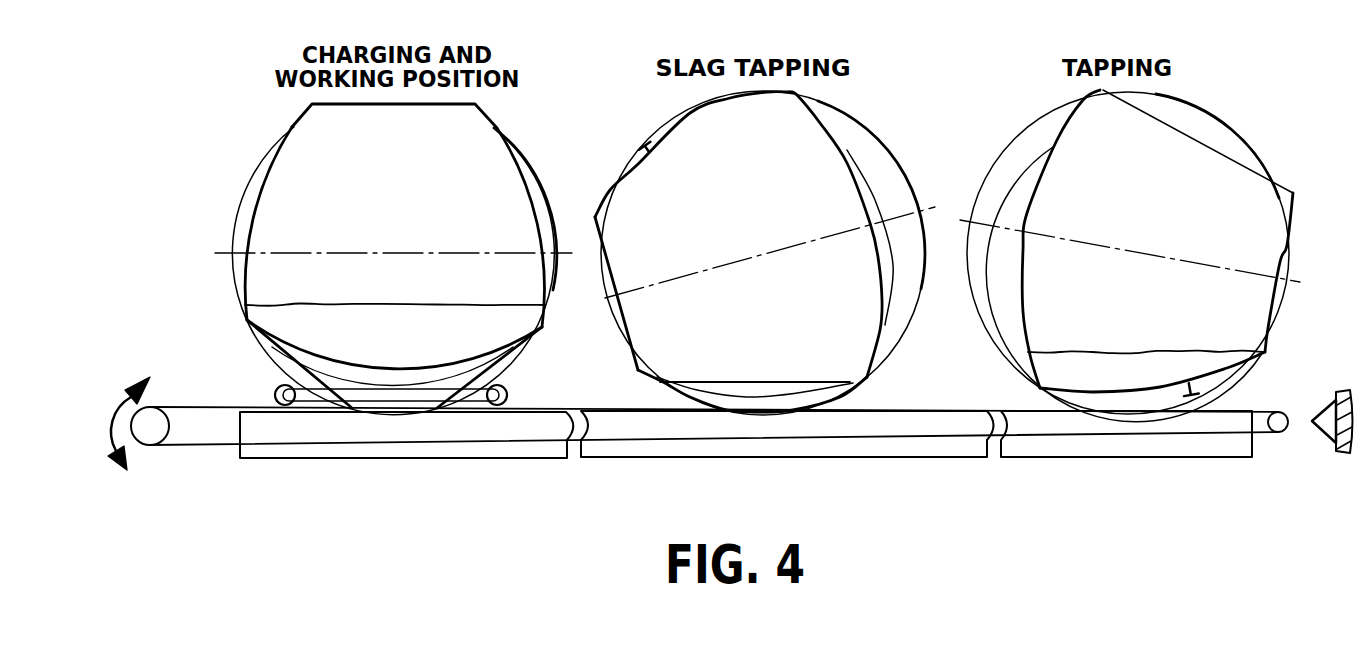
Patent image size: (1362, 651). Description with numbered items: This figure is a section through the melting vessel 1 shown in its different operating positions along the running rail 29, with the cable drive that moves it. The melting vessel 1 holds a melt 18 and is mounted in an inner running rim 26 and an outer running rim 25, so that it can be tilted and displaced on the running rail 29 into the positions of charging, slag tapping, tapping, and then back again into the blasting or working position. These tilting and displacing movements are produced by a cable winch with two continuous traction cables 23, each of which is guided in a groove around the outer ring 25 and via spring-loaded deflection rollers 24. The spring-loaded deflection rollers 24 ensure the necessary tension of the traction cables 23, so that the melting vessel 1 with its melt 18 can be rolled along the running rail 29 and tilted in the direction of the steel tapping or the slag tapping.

The melting vessel 1 is at (404, 198).
The melt 18 is at (408, 349).
The traction cables 23 is at (252, 166).
The spring-loaded deflection rollers 24 is at (277, 388).
The outer running rim 25 is at (285, 357).
The inner running rim 26 is at (482, 360).
The running rail 29 is at (311, 430).